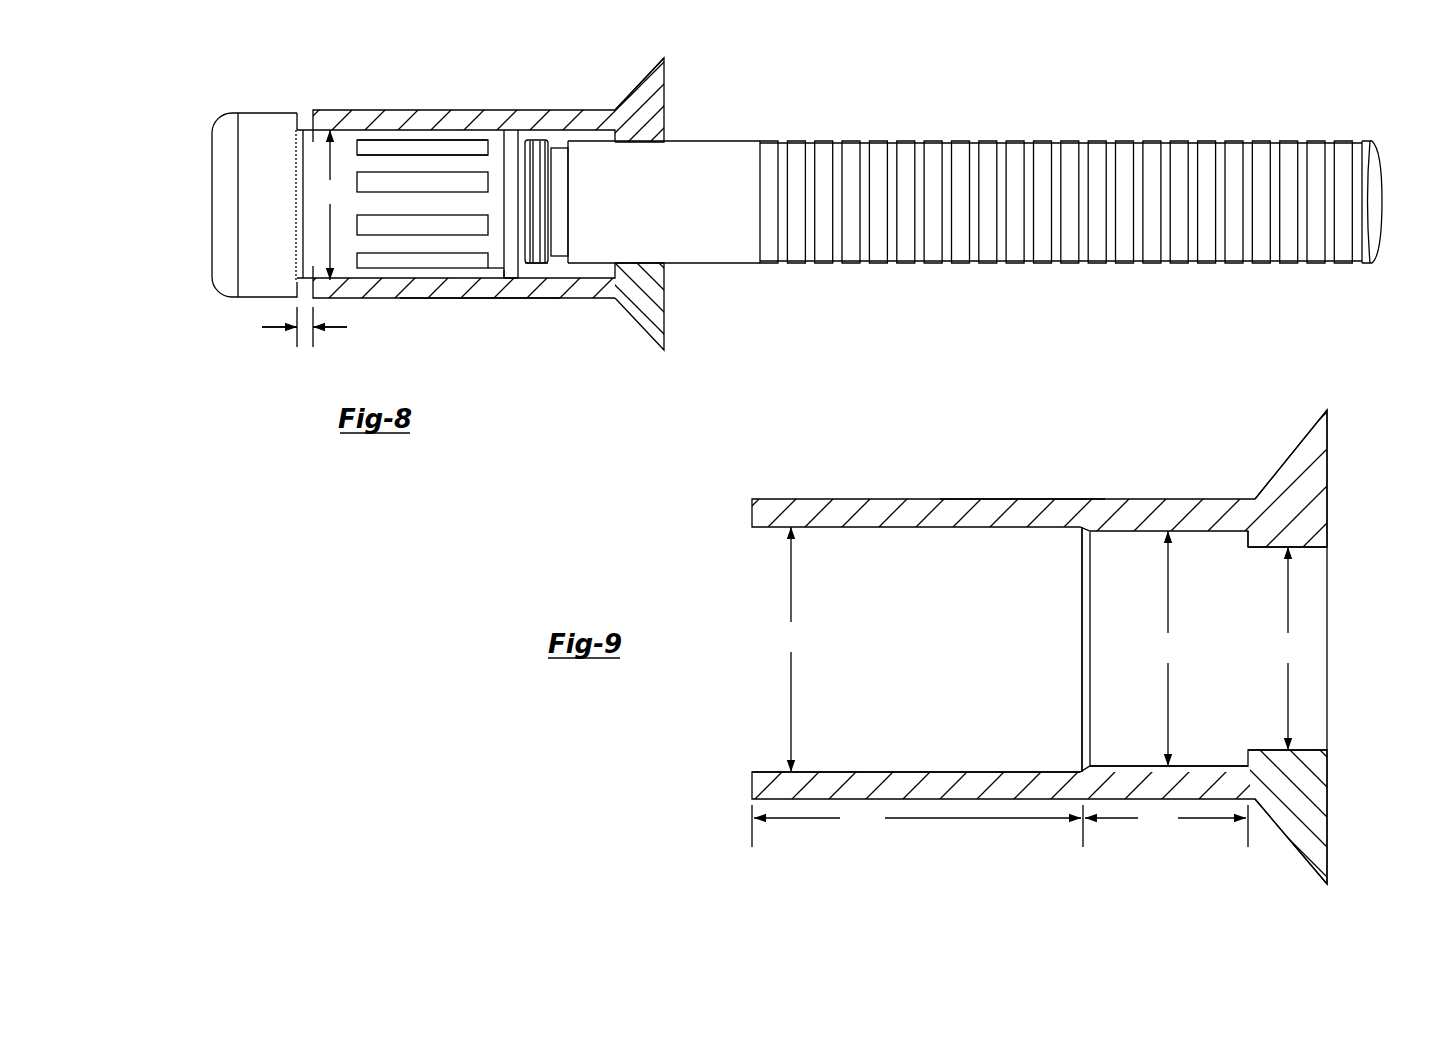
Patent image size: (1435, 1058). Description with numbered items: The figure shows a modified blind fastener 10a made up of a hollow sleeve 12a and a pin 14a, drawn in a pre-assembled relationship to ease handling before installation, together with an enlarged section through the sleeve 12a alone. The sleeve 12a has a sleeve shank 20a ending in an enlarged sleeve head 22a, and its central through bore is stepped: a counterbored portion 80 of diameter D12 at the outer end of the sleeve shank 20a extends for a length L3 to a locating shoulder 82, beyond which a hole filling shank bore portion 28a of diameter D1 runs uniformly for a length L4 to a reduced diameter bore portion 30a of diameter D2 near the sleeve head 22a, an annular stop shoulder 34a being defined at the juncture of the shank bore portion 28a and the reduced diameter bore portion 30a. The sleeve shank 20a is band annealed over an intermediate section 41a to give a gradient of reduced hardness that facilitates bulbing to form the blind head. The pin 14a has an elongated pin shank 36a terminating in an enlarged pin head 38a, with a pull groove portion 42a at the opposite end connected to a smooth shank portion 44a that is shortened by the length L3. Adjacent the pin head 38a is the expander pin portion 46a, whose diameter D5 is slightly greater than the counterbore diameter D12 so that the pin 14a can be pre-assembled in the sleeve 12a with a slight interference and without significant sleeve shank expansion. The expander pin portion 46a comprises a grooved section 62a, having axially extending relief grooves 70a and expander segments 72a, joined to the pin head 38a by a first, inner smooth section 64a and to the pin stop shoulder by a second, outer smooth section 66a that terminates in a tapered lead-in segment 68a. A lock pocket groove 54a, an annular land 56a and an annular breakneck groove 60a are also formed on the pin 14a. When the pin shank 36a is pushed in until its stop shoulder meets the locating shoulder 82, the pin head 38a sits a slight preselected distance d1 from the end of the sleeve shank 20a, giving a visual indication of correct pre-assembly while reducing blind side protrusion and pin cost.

In FIG. 8, the blind fastener 10a is at (760, 328).
In FIG. 8, the hollow sleeve 12a is at (512, 110).
In FIG. 9, the hollow sleeve 12a is at (945, 855).
In FIG. 8, the pin 14a is at (714, 140).
In FIG. 9, the sleeve shank 20a is at (1253, 443).
In FIG. 8, the enlarged sleeve head 22a is at (658, 302).
In FIG. 9, the enlarged sleeve head 22a is at (1297, 466).
In FIG. 9, the shank bore portion 28a is at (1248, 763).
In FIG. 9, the reduced diameter bore portion 30a is at (1315, 548).
In FIG. 9, the annular stop shoulder 34a is at (1247, 535).
In FIG. 8, the pin shank 36a is at (1374, 231).
In FIG. 8, the pin head 38a is at (250, 125).
In FIG. 8, the intermediate section 41a is at (467, 296).
In FIG. 9, the intermediate section 41a is at (938, 492).
In FIG. 8, the pull groove portion 42a is at (1378, 141).
In FIG. 8, the smooth shank portion 44a is at (770, 173).
In FIG. 8, the expander pin portion 46a is at (305, 237).
In FIG. 8, the lock pocket groove 54a is at (522, 146).
In FIG. 8, the annular land 56a is at (538, 265).
In FIG. 8, the annular breakneck groove 60a is at (552, 147).
In FIG. 8, the grooved section 62a is at (357, 192).
In FIG. 8, the first, inner smooth section 64a is at (313, 142).
In FIG. 8, the second, outer smooth section 66a is at (498, 268).
In FIG. 8, the tapered lead-in segment 68a is at (510, 270).
In FIG. 8, the relief grooves 70a is at (373, 152).
In FIG. 8, the expander segments 72a is at (448, 165).
In FIG. 9, the counterbored portion 80 is at (753, 772).
In FIG. 9, the locating shoulder 82 is at (1082, 630).
In FIG. 8, the diameter of expander pin portion D5 is at (329, 205).
In FIG. 8, the preselected distance d1 is at (304, 339).
In FIG. 9, the counterbore diameter D12 is at (795, 649).
In FIG. 9, the diameter of shank bore portion D1 is at (1167, 648).
In FIG. 9, the diameter of reduced diameter bore portion D2 is at (1287, 648).
In FIG. 9, the length of counterbored portion L3 is at (917, 826).
In FIG. 9, the length of shank bore portion L4 is at (1166, 826).